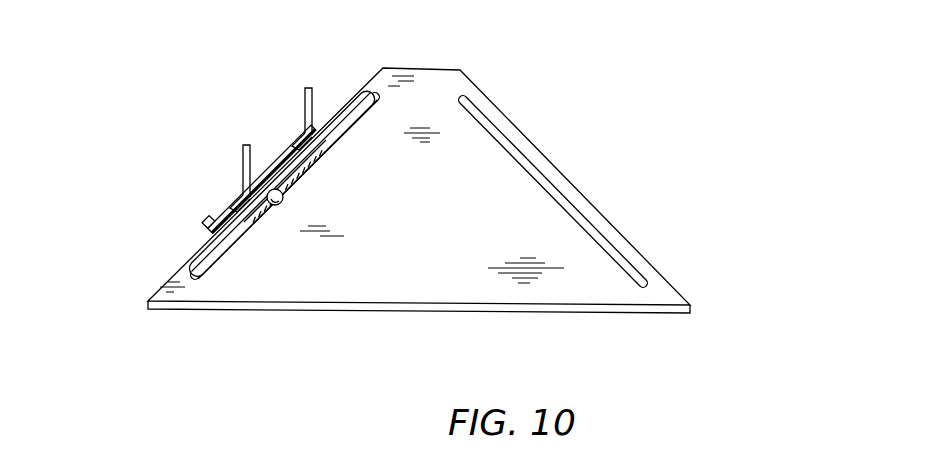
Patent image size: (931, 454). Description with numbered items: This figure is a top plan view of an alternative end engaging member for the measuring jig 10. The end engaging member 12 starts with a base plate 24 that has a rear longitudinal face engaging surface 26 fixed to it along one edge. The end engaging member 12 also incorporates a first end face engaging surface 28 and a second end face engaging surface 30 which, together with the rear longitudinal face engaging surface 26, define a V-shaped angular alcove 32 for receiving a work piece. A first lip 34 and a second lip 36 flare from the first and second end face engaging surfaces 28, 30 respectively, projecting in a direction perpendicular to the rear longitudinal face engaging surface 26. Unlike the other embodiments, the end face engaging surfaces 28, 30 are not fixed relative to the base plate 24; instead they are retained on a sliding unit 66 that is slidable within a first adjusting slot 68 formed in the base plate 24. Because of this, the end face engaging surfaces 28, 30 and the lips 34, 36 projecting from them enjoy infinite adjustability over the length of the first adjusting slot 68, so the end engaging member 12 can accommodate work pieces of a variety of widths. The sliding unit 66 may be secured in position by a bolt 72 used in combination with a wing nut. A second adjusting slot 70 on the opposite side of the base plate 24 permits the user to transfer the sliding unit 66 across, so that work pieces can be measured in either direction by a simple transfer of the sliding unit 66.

The measuring jig 10 is at (642, 160).
The end engaging member 12 is at (225, 146).
The base plate 24 is at (485, 214).
The rear longitudinal face engaging surface 26 is at (660, 314).
The first end face engaging surface 28 is at (213, 218).
The second end face engaging surface 30 is at (290, 145).
The V-shaped angular alcove 32 is at (273, 265).
The first lip 34 is at (247, 186).
The second lip 36 is at (312, 112).
The sliding unit 66 is at (222, 150).
The first adjusting slot 68 is at (200, 264).
The second adjusting slot 70 is at (590, 232).
The bolt 72 is at (265, 184).